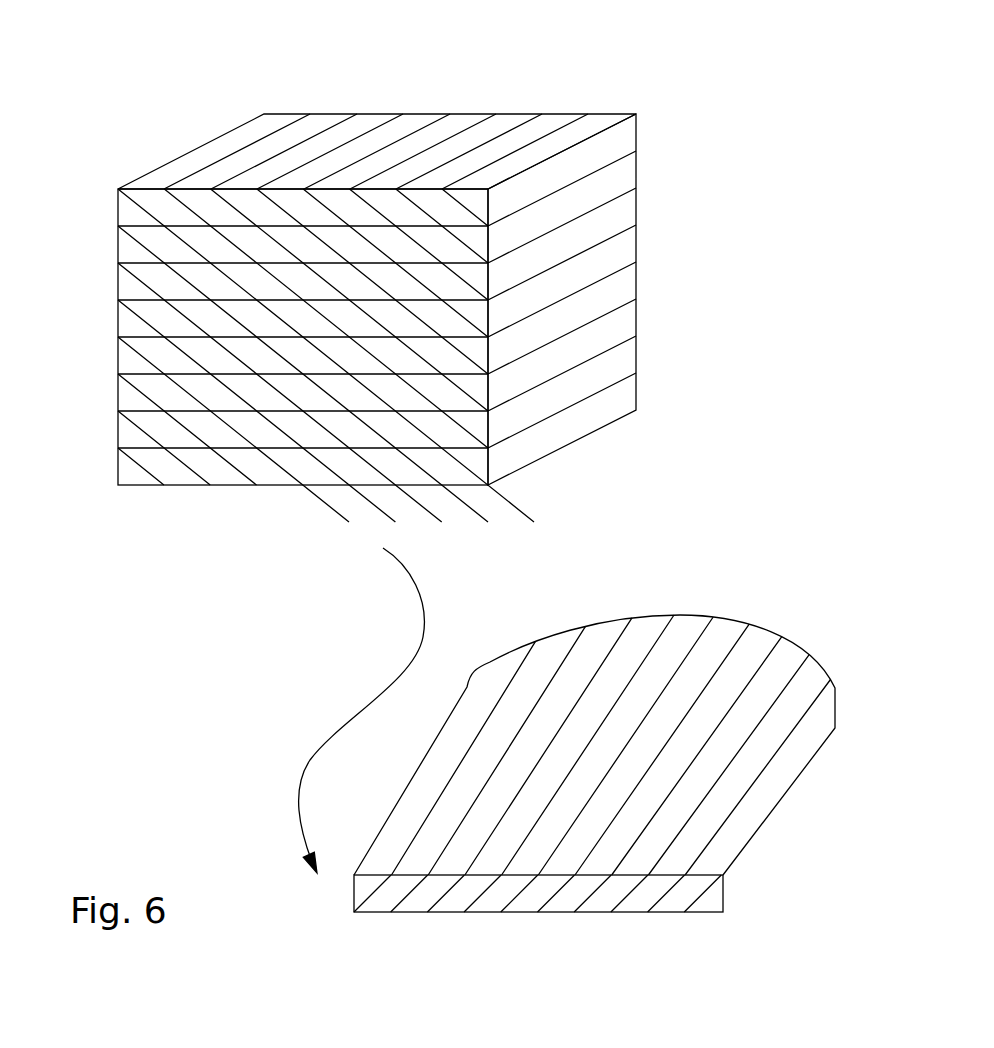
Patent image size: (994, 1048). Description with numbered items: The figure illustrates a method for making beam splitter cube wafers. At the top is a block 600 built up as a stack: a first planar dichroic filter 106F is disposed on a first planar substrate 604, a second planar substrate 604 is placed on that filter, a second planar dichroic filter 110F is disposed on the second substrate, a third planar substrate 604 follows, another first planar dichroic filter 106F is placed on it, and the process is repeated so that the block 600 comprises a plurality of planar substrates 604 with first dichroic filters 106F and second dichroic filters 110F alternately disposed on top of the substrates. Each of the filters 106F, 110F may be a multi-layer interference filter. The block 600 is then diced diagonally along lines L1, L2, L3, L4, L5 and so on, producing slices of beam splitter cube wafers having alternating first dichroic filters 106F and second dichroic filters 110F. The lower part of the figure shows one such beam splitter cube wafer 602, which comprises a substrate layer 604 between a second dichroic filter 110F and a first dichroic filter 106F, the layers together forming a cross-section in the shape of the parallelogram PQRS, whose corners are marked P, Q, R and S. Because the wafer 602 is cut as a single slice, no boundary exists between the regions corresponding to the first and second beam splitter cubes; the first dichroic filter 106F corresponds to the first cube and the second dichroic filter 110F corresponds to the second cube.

The block 600 is at (279, 54).
The beam splitter cube wafer 602 is at (765, 552).
The planar substrate 604 is at (117, 201).
The first planar dichroic filter 106F is at (638, 152).
The second planar dichroic filter 110F is at (638, 189).
The dicing line L1 is at (355, 542).
The dicing line L2 is at (411, 542).
The dicing line L3 is at (451, 542).
The dicing line L4 is at (497, 542).
The dicing line L5 is at (542, 542).
The parallelogram corner point P is at (344, 930).
The parallelogram corner point Q is at (391, 931).
The parallelogram corner point R is at (419, 861).
The parallelogram corner point S is at (381, 861).